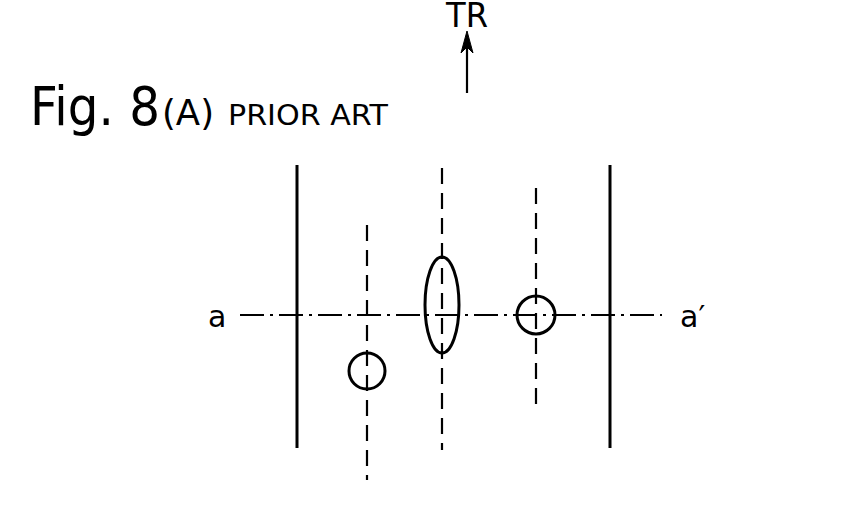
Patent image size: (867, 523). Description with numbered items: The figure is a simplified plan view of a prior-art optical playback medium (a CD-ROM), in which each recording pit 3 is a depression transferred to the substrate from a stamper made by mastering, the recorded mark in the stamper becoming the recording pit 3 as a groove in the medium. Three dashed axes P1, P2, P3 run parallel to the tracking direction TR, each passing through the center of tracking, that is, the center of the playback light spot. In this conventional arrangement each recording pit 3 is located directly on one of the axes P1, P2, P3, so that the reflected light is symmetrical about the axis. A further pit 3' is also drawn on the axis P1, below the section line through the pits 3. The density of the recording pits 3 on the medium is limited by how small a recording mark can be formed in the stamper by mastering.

The recording pit 3 is at (621, 266).
The recording pit (off-track) 3' is at (356, 409).
The axis P1 is at (368, 450).
The axis P2 is at (440, 413).
The axis P3 is at (535, 393).